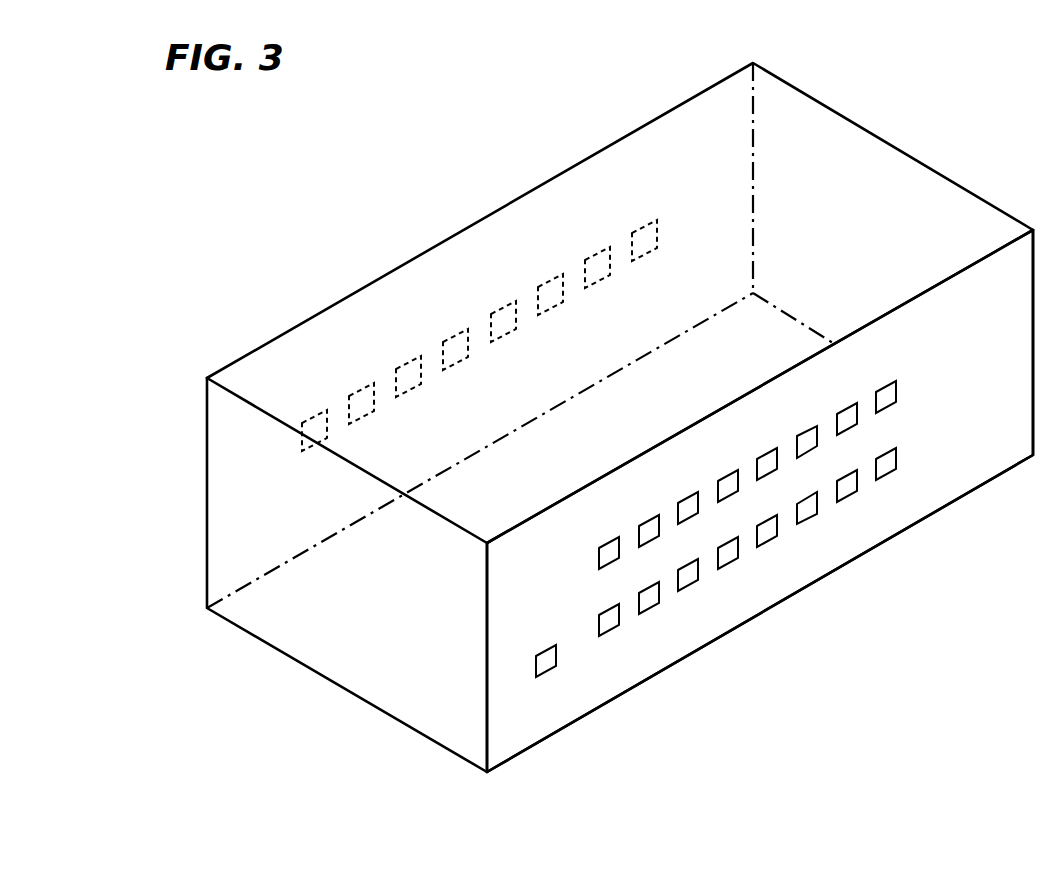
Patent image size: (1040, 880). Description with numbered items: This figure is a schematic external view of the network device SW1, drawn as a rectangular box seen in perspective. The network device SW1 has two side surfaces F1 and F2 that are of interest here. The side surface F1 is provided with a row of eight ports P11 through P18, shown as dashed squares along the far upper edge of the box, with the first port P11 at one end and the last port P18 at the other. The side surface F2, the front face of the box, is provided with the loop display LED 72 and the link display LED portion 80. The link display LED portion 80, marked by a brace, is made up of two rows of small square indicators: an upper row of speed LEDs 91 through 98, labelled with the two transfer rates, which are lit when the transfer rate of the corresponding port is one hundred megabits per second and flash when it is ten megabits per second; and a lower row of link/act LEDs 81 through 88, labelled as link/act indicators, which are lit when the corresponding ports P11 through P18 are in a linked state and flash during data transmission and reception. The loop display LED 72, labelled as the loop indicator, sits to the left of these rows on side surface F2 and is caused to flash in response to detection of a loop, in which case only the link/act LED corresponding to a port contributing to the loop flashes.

The network device SW1 is at (938, 125).
The side surface F1 is at (478, 268).
The side surface F2 is at (530, 712).
The port P11 is at (312, 422).
The port P18 is at (645, 223).
The link display LED portion 80 is at (1018, 583).
The link/act LED 81 is at (610, 630).
The link/act LED 88 is at (887, 465).
The speed LED 91 is at (610, 557).
The speed LED 98 is at (887, 402).
The loop display LED 72 is at (535, 662).